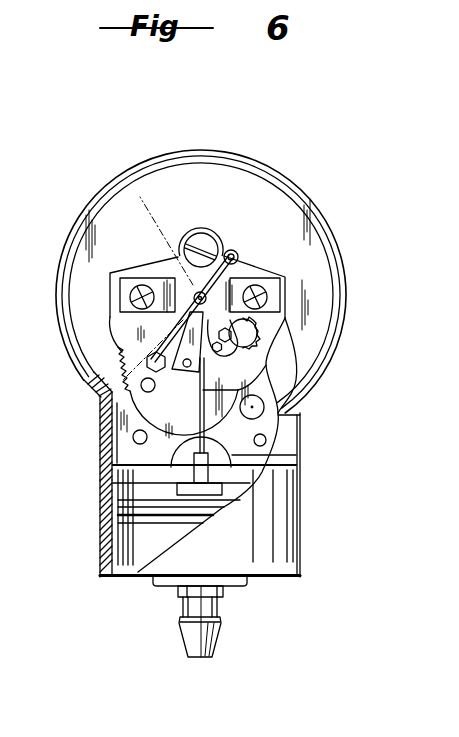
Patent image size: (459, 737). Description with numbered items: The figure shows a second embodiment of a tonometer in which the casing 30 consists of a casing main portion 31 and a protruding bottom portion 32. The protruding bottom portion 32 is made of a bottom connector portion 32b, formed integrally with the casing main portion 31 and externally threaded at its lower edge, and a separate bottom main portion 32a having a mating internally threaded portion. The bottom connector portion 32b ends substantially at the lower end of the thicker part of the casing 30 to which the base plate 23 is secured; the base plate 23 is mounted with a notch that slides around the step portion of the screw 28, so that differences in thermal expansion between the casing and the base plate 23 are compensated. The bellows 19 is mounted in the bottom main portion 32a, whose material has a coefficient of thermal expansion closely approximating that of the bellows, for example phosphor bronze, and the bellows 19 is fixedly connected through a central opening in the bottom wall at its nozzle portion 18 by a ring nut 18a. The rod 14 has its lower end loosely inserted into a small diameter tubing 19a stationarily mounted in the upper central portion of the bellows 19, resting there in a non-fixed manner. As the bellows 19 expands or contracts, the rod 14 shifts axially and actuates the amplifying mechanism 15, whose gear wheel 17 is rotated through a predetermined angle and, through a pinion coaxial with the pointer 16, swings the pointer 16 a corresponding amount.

The rod 14 is at (283, 393).
The amplifying mechanism 15 is at (236, 366).
The pointer 16 is at (200, 298).
The gear wheel 17 is at (123, 356).
The nozzle portion 18 is at (217, 633).
The ring nut 18a is at (250, 583).
The bellows 19 is at (222, 505).
The small diameter tubing 19a is at (262, 458).
The base plate 23 is at (285, 292).
The screw 28 is at (183, 243).
The casing 30 is at (288, 178).
The casing main portion 31 is at (335, 238).
The protruding bottom portion 32 is at (288, 552).
The bottom main portion 32a is at (107, 532).
The bottom connector portion 32b is at (102, 458).